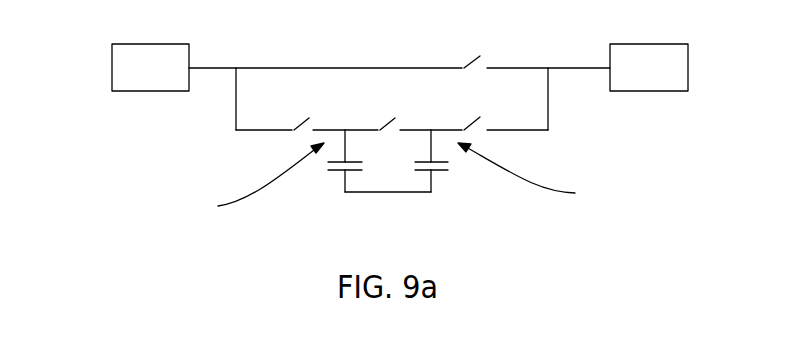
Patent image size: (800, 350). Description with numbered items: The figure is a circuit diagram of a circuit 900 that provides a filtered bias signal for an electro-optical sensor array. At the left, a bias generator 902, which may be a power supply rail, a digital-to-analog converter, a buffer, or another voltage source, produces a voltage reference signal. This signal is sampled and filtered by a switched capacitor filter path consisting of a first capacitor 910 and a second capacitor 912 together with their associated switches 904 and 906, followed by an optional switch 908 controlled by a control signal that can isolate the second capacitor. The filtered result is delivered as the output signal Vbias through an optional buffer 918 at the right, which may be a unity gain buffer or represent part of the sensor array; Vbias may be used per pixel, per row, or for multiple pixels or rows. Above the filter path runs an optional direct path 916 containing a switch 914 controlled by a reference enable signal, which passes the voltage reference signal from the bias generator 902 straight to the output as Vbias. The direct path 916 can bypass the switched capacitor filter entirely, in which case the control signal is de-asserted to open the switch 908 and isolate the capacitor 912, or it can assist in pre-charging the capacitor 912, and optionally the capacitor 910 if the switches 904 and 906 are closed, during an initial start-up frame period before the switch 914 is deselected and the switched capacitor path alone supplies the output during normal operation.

The circuit 900 is at (512, 220).
The bias generator 902 is at (165, 78).
The switch 904 is at (296, 122).
The switch 906 is at (382, 121).
The switch 908 is at (469, 121).
The capacitor 910 is at (336, 172).
The capacitor 912 is at (447, 173).
The switch 914 is at (478, 70).
The direct path 916 is at (341, 68).
The buffer 918 is at (665, 78).